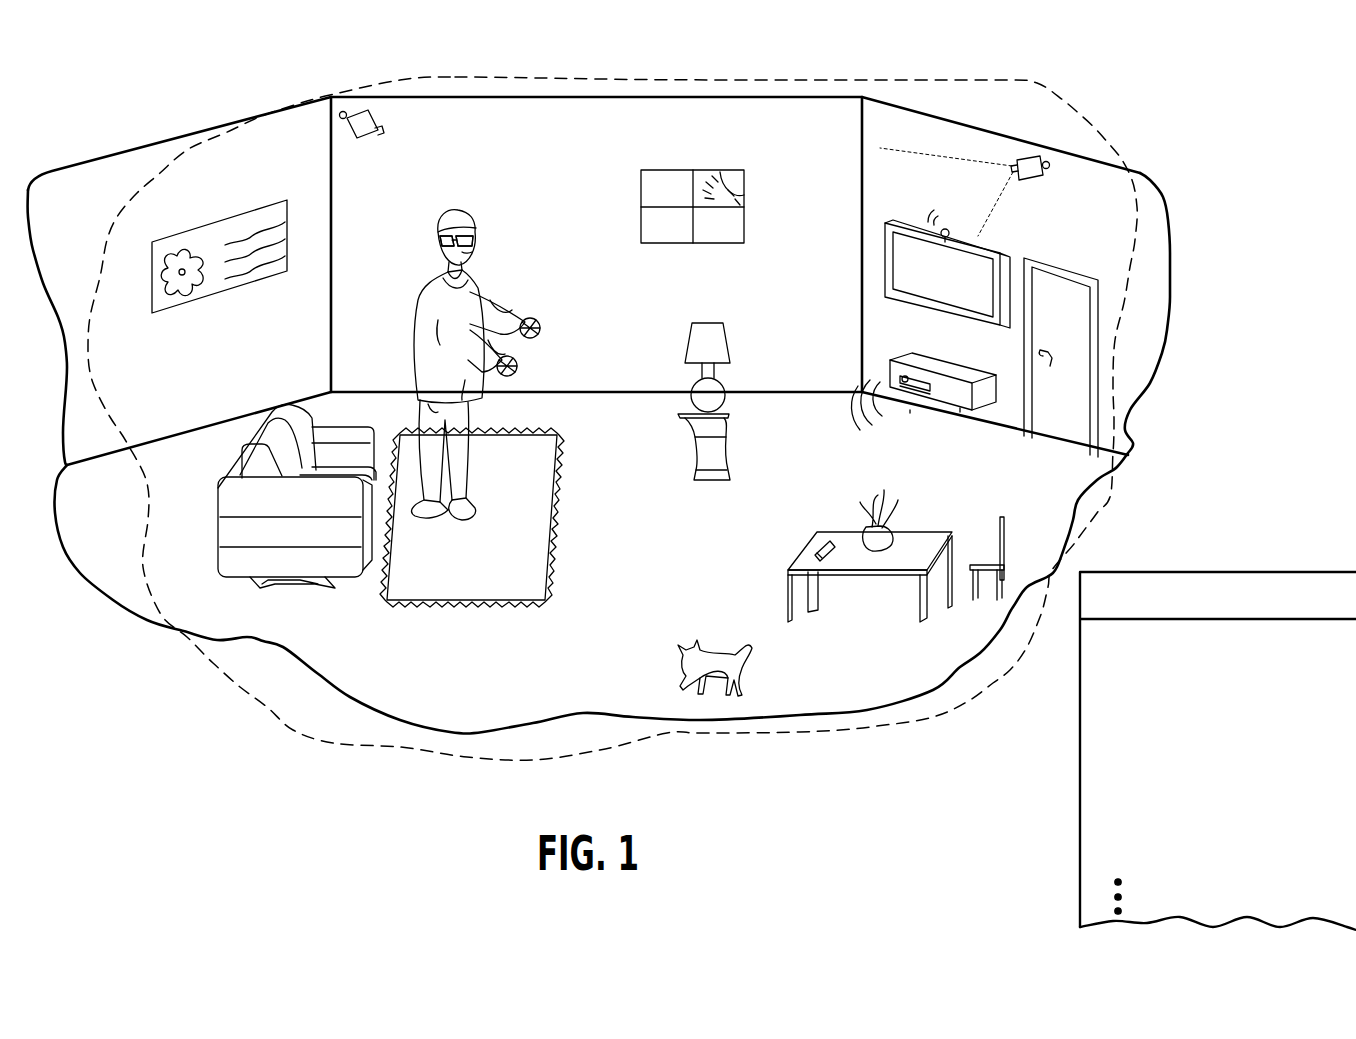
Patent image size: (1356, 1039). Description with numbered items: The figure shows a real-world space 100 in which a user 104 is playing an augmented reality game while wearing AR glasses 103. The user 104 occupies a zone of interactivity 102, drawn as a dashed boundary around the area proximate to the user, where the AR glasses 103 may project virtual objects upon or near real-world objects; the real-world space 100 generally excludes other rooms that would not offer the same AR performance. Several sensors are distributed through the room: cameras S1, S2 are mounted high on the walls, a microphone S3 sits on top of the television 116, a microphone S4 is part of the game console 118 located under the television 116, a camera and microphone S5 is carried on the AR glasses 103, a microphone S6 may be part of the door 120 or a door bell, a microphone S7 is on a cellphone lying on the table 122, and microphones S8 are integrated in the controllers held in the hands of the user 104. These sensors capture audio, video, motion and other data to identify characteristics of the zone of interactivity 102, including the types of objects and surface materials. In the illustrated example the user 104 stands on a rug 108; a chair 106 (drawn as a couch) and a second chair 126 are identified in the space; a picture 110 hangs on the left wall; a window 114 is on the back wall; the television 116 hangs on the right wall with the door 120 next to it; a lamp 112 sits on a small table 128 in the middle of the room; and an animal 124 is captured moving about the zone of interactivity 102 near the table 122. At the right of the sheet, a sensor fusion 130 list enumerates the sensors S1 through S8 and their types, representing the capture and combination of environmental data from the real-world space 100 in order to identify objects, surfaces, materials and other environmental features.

The real-world space 100 is at (800, 130).
The zone of interactivity 102 is at (455, 77).
The AR glasses 103 is at (440, 222).
The user 104 is at (418, 316).
The chair 106 is at (233, 578).
The rug 108 is at (466, 608).
The picture 110 is at (198, 295).
The lamp 112 is at (730, 335).
The window 114 is at (662, 168).
The television 116 is at (1002, 250).
The game console 118 is at (918, 378).
The door 120 is at (1066, 265).
The table 122 is at (798, 552).
The dog 124 is at (684, 670).
The chair 126 is at (1006, 540).
The small table 128 is at (726, 436).
The sensor fusion 130 is at (1233, 572).
The camera S1 is at (378, 118).
The camera S2 is at (1029, 158).
The microphone S3 is at (947, 228).
The microphone S4 is at (905, 383).
The camera and microphone S5 is at (476, 232).
The microphone S6 is at (1042, 358).
The microphone on cellphone S7 is at (822, 548).
The microphone in controllers S8 is at (538, 322).